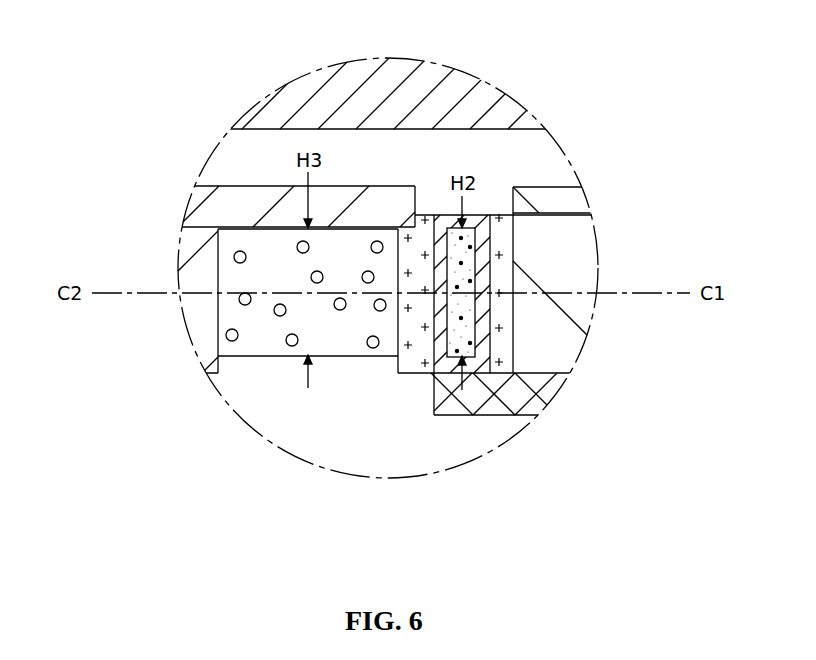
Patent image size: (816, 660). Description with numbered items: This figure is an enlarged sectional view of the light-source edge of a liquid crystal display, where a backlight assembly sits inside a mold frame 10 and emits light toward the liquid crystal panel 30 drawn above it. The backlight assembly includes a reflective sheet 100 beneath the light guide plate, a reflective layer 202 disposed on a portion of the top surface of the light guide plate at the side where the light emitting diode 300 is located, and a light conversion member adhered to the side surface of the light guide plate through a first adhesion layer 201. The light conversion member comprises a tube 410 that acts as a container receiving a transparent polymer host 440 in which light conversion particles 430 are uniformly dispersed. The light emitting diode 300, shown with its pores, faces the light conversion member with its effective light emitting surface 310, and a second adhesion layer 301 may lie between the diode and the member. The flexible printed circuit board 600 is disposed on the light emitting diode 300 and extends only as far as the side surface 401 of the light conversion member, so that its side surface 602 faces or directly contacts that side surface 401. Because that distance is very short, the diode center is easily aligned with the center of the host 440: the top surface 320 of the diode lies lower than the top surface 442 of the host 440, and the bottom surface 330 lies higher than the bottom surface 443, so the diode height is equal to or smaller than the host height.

The mold frame 10 is at (198, 277).
The liquid crystal panel 30 is at (462, 95).
The reflective sheet 100 is at (497, 402).
The first adhesion layer 201 is at (503, 353).
The reflective layer 202 is at (552, 195).
The light emitting diode 300 is at (236, 298).
The second adhesion layer 301 is at (396, 325).
The light emitting surface 310 is at (398, 262).
The top surface 320 is at (262, 230).
The bottom surface 330 is at (262, 358).
The side surface 401 is at (433, 317).
The tube 410 is at (483, 233).
The light conversion particle 430 is at (470, 281).
The host 440 is at (471, 303).
The top surface 442 is at (470, 249).
The bottom surface 443 is at (470, 343).
The flexible printed circuit board 600 is at (235, 200).
The side surface 602 is at (413, 225).